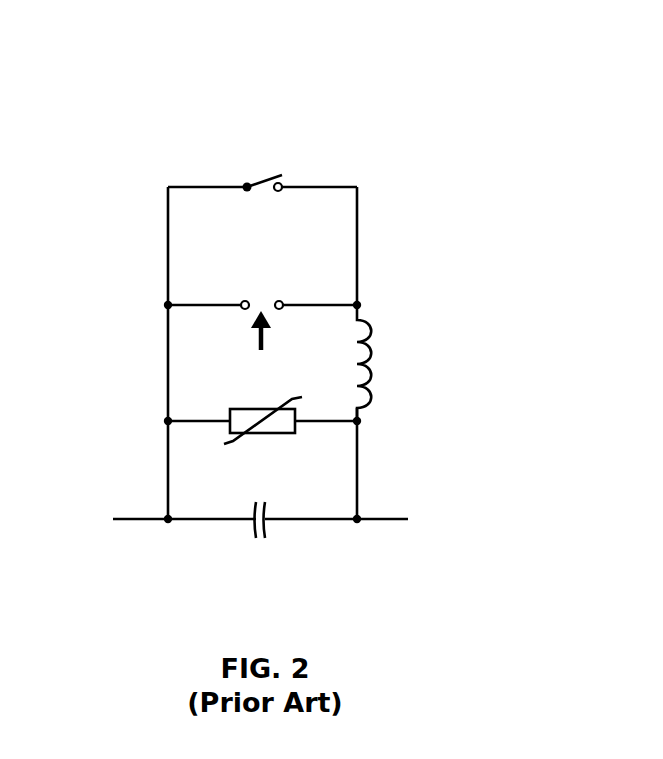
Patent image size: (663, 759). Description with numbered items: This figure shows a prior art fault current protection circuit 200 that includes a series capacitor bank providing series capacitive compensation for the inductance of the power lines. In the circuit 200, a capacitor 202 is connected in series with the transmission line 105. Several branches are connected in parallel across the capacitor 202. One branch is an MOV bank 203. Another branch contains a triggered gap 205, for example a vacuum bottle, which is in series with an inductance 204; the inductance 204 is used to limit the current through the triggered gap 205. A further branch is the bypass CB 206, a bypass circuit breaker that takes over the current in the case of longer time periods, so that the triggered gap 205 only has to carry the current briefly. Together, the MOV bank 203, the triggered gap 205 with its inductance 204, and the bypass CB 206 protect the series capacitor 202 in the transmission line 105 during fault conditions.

The fault current protection circuit 200 is at (374, 120).
The bypass CB 206 is at (260, 203).
The triggered gap 205 is at (243, 325).
The inductance 204 is at (380, 358).
The MOV bank 203 is at (277, 445).
The capacitor 202 is at (260, 549).
The transmission line 105 is at (135, 520).